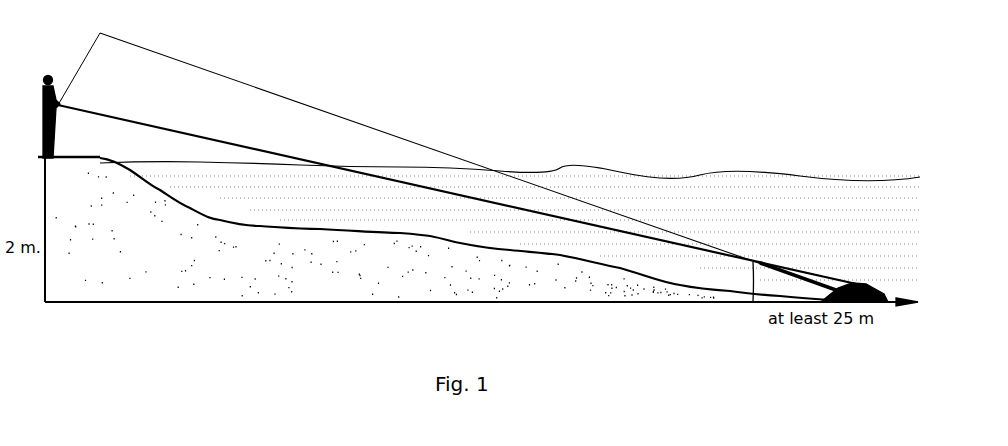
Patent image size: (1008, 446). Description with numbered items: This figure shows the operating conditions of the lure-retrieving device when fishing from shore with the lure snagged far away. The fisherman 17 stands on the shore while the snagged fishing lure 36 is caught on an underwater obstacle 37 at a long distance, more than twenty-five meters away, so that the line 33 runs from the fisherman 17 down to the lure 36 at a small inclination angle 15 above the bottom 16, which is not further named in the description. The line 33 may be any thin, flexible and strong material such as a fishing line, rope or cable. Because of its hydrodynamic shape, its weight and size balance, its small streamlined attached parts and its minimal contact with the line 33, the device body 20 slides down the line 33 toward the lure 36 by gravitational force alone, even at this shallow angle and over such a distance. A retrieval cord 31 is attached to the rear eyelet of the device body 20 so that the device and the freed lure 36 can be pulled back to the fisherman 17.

The fisherman 17 is at (52, 62).
The retrieval cord 31 is at (392, 165).
The line 33 is at (452, 155).
The bottom / seabed 16 is at (506, 300).
The inclination angle 15 is at (752, 262).
The device body 20 is at (835, 285).
The underwater obstacle 37 is at (840, 290).
The snagged fishing lure 36 is at (855, 283).